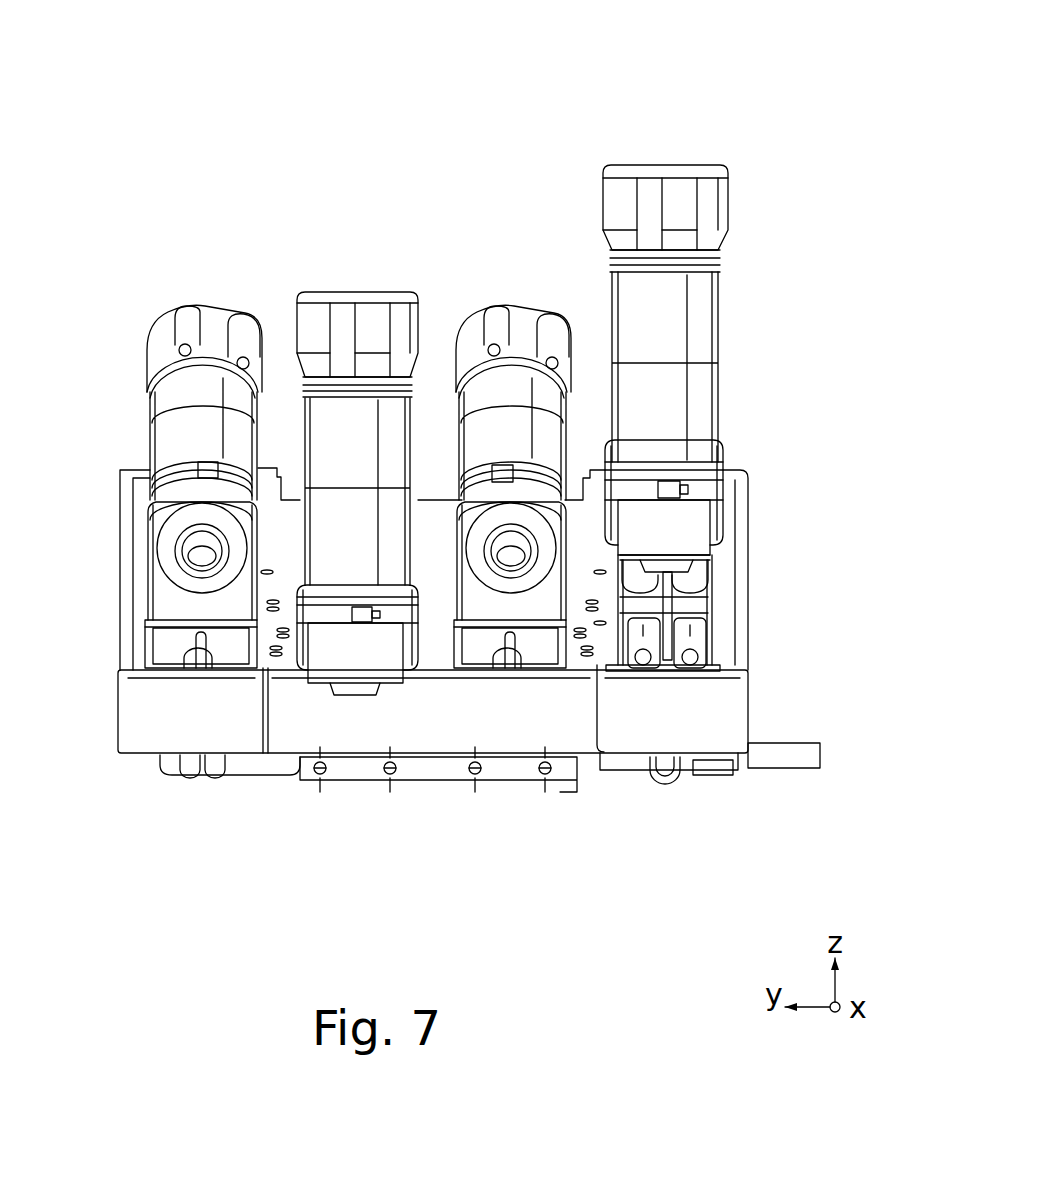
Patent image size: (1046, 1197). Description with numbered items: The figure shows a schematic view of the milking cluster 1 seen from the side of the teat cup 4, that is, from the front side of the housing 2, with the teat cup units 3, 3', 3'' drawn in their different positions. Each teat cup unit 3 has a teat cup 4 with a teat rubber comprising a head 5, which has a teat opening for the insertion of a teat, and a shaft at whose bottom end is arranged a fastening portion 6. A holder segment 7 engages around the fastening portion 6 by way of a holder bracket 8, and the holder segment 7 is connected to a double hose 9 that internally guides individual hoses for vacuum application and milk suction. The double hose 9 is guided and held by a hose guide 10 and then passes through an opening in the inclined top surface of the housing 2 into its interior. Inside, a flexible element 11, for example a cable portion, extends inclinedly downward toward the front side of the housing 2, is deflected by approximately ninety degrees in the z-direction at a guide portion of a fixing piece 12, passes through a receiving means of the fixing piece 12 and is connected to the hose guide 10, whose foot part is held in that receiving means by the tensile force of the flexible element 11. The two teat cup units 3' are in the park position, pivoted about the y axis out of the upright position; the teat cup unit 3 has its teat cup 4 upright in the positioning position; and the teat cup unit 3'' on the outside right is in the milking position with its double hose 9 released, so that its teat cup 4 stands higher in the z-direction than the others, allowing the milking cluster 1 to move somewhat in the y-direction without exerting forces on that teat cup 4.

The milking cluster 1 is at (128, 222).
The housing 2 is at (713, 717).
The teat cup unit 3 is at (357, 252).
The teat cup unit 3' is at (359, 275).
The teat cup unit 3'' is at (665, 142).
The teat cup 4 is at (290, 420).
The head 5 is at (710, 193).
The fastening portion 6 is at (183, 502).
The holder segment 7 is at (153, 565).
The holder bracket 8 is at (200, 470).
The double hose 9 is at (689, 583).
The hose guide 10 is at (303, 680).
The flexible element 11 is at (190, 665).
The fixing piece 12 is at (237, 640).